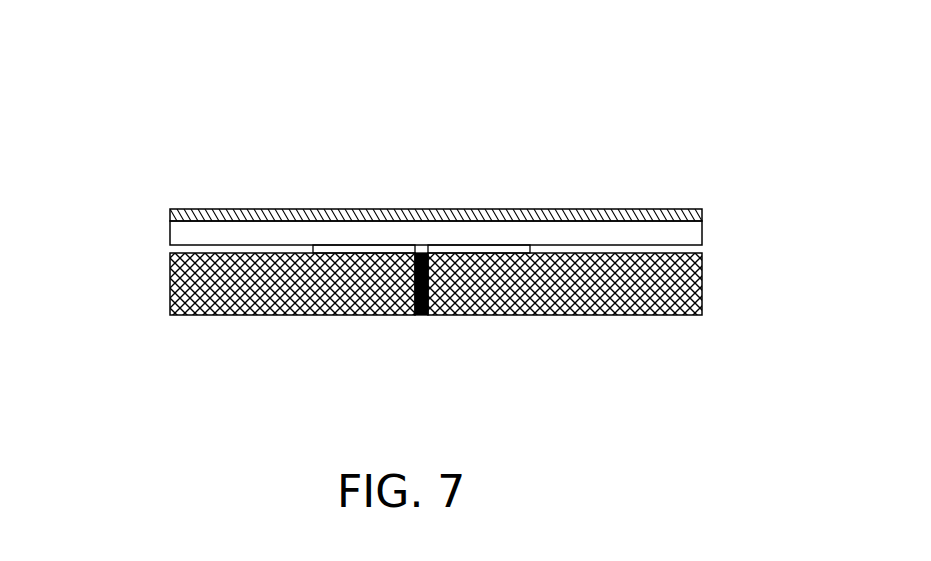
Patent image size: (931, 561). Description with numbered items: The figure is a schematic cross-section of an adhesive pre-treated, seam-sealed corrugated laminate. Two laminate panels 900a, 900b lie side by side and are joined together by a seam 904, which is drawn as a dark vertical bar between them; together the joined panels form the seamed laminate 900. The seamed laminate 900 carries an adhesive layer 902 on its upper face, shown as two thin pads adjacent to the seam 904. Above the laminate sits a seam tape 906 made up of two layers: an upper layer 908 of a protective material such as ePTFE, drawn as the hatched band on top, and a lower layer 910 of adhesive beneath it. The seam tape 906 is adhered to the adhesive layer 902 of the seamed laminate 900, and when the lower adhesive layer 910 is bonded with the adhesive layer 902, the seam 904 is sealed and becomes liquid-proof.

The seamed laminate 900 is at (356, 80).
The adhesive layer 902 is at (360, 245).
The seam 904 is at (423, 316).
The seam tape 906 is at (147, 225).
The upper layer 908 is at (632, 219).
The lower layer 910 is at (692, 236).
The laminate panel 900a is at (240, 316).
The laminate panel 900b is at (543, 316).